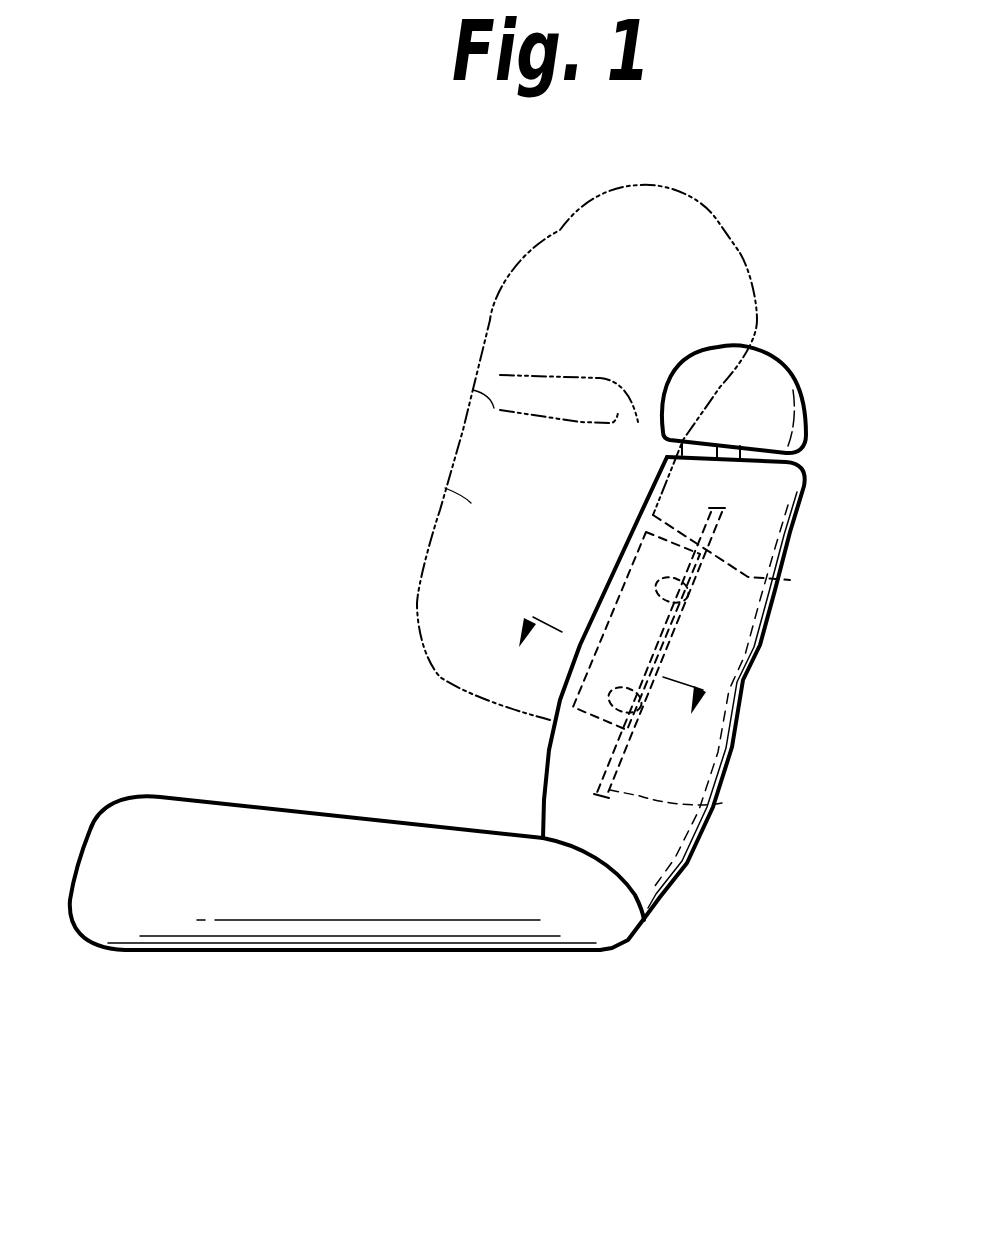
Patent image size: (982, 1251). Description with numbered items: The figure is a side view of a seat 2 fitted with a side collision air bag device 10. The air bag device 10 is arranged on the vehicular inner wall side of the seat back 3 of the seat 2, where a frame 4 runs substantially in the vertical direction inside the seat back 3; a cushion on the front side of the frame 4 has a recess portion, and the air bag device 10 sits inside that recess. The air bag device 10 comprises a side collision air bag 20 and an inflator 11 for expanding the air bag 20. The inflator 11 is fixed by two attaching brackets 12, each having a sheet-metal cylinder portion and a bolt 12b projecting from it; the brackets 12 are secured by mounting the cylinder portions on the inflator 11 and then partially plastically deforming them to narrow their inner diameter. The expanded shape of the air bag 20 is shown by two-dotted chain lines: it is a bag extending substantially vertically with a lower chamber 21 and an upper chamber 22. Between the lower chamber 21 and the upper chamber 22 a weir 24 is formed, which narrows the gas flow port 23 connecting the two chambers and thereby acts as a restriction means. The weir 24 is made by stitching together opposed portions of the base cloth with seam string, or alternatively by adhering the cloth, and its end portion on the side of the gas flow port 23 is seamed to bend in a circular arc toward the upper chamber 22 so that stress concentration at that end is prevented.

The seat 2 is at (340, 1001).
The seat back 3 is at (653, 863).
The frame 4 is at (722, 803).
The air bag device 10 is at (557, 768).
The inflator 11 is at (668, 630).
The attaching bracket 12 is at (720, 605).
The bolt 12b is at (720, 605).
The side collision air bag 20 is at (478, 264).
The lower chamber 21 is at (445, 488).
The upper chamber 22 is at (680, 222).
The gas flow port 23 is at (500, 375).
The weir 24 is at (473, 388).